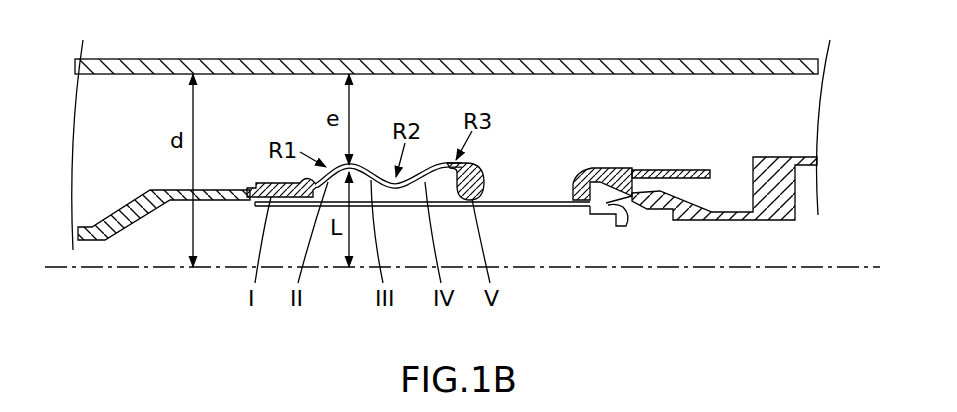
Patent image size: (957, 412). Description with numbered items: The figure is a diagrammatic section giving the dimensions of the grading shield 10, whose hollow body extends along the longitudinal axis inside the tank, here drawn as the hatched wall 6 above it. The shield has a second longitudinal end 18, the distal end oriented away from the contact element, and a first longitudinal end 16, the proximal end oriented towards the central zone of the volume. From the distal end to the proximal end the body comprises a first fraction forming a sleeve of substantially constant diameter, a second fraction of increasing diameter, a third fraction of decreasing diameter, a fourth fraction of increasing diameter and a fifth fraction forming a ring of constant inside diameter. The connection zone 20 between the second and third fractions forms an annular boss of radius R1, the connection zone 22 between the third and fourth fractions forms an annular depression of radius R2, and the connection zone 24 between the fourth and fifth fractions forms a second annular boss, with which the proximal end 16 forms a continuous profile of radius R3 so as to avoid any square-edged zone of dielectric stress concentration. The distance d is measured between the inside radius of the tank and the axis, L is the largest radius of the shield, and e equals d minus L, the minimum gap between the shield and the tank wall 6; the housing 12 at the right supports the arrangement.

The casing wall 6 is at (498, 72).
The grading shield 10 is at (389, 112).
The seal housing / abradable support 12 is at (660, 165).
The first longitudinal end 16 is at (489, 194).
The second longitudinal end 18 is at (272, 187).
The connection zone 20 is at (358, 162).
The connection zone 22 is at (427, 158).
The connection zone 24 is at (487, 172).